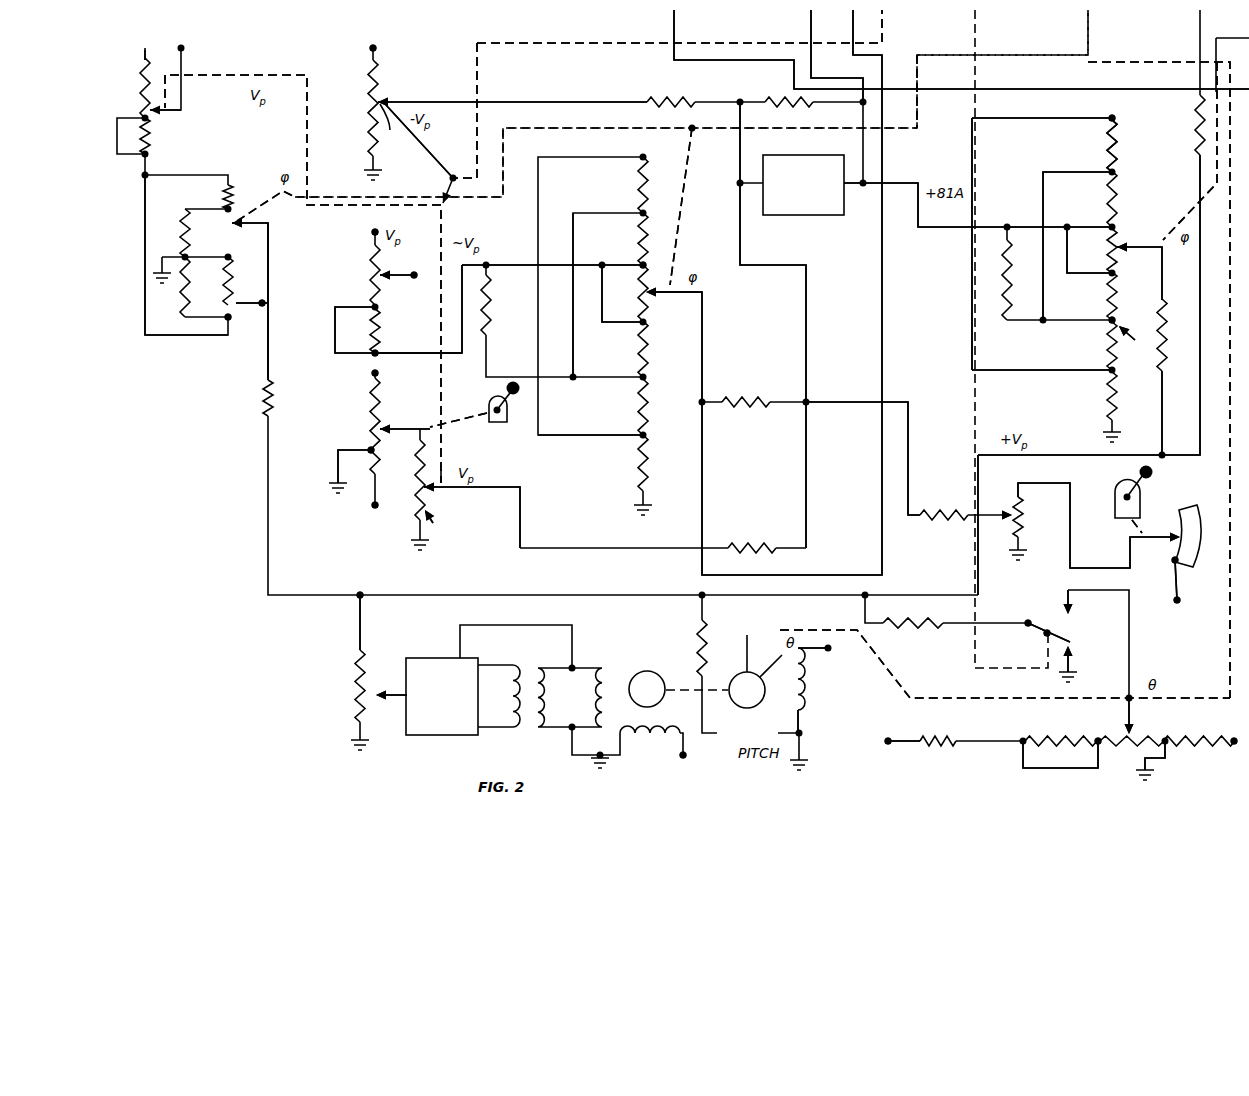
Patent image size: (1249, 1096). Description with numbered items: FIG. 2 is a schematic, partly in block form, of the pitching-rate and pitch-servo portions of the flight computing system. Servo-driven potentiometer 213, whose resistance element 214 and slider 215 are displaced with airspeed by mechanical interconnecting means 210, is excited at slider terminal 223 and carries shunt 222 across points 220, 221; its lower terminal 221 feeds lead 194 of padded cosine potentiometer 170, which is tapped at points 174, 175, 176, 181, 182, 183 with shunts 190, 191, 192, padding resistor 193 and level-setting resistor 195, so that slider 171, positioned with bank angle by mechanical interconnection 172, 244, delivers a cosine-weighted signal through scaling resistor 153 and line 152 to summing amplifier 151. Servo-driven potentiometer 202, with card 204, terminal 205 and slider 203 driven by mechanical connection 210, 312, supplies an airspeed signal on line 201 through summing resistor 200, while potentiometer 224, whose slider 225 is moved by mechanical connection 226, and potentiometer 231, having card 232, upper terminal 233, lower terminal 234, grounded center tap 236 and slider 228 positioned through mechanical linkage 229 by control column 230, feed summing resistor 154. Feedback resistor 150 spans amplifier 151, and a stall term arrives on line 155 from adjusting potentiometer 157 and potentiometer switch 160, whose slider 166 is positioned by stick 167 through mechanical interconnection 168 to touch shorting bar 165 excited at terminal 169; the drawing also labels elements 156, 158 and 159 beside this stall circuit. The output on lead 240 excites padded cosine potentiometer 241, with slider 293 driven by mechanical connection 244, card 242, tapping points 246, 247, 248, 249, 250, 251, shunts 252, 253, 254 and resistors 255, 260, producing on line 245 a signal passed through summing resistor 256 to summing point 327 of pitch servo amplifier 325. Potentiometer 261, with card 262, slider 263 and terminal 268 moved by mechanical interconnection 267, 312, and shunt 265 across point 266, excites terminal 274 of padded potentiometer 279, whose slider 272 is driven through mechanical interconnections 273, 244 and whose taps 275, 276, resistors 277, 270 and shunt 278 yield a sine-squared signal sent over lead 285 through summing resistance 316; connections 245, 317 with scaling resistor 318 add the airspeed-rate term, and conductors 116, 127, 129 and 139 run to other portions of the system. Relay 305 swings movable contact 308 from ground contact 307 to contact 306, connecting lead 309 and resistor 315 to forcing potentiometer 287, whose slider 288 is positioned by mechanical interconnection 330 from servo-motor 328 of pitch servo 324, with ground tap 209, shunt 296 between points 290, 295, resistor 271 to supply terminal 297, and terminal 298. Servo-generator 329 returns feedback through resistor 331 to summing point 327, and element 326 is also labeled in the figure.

The conductor 116 is at (672, 30).
The conductor 127 is at (810, 40).
The conductor 129 is at (853, 40).
The dashed connection 139 is at (1135, 60).
The feedback resistor 150 is at (788, 104).
The summing amplifier 151 is at (782, 156).
The line 152 is at (806, 340).
The scaling resistor 153 is at (760, 382).
The summing resistor 154 is at (760, 544).
The line 155 is at (866, 400).
The resistor 156 is at (940, 510).
The adjusting potentiometer 157 is at (1010, 497).
The wiper arm 158 is at (997, 526).
The conductor 159 is at (1024, 505).
The potentiometer switch 160 is at (1205, 510).
The shorting bar 165 is at (1192, 562).
The slider 166 is at (1176, 537).
The control column 167 is at (1122, 486).
The mechanical interconnection 168 is at (1126, 520).
The terminal 169 is at (1192, 584).
The padded cosine potentiometer 170 is at (652, 343).
The slider 171 is at (661, 293).
The mechanical interconnection 172 is at (688, 188).
The tapping point 174 is at (628, 142).
The tapping point 175 is at (642, 210).
The tapping point 176 is at (650, 268).
The tapping point 181 is at (646, 322).
The tapping point 182 is at (646, 377).
The tapping point 183 is at (646, 435).
The shunt 190 is at (602, 318).
The shunt 191 is at (622, 380).
The shunt 192 is at (520, 264).
The padding resistor 193 is at (492, 302).
The input line 194 is at (620, 264).
The level-setting resistor 195 is at (650, 456).
The summing resistor 200 is at (680, 100).
The line 201 is at (602, 102).
The servo-driven potentiometer 202 is at (383, 104).
The slider 203 is at (391, 126).
The card 204 is at (371, 145).
The terminal 205 is at (370, 48).
The ground tapping point 209 is at (1166, 746).
The mechanical interconnecting means 210 is at (438, 158).
The servo-driven potentiometer 213 is at (362, 274).
The resistance element 214 is at (374, 252).
The slider 215 is at (378, 290).
The point 220 is at (380, 318).
The lower terminal 221 is at (379, 352).
The shunt 222 is at (334, 344).
The slider terminal 223 is at (412, 274).
The servo-driven potentiometer 224 is at (443, 520).
The slider 225 is at (431, 490).
The mechanical connection 226 is at (443, 476).
The slider 228 is at (384, 426).
The mechanical linkage 229 is at (840, 664).
The control column 230 is at (488, 412).
The potentiometer 231 is at (362, 434).
The card 232 is at (419, 478).
The upper terminal 233 is at (378, 374).
The lower terminal 234 is at (376, 508).
The center tap 236 is at (364, 450).
The lead 240 is at (920, 172).
The padded cosine-function potentiometer 241 is at (1132, 317).
The card 242 is at (1118, 340).
The mechanical connection 244 is at (936, 128).
The line 245 is at (1118, 266).
The tapping point 246 is at (1127, 131).
The tapping point 247 is at (1106, 148).
The tapping point 248 is at (1106, 200).
The tapping point 249 is at (1086, 296).
The tapping point 250 is at (1106, 328).
The tapping point 251 is at (1108, 372).
The shunt 252 is at (1070, 116).
The shunt 253 is at (1094, 172).
The shunt 254 is at (1086, 270).
The resistor 255 is at (1014, 256).
The summing resistor 256 is at (1165, 322).
The resistor 260 is at (1106, 394).
The servo-driven potentiometer 261 is at (158, 127).
The card 262 is at (138, 96).
The slider 263 is at (164, 112).
The shunt 265 is at (117, 135).
The point 266 is at (157, 104).
The mechanical interconnection means 267 is at (270, 78).
The terminal 268 is at (183, 68).
The resistor 270 is at (183, 296).
The resistor 271 is at (226, 340).
The slider 272 is at (234, 232).
The mechanical interconnection 273 is at (212, 198).
The terminal 274 is at (145, 272).
The tap 275 is at (233, 262).
The tap 276 is at (252, 297).
The resistor 277 is at (182, 226).
The shunt 278 is at (198, 254).
The padded potentiometer 279 is at (176, 346).
The lead 285 is at (268, 340).
The forcing potentiometer 287 is at (1200, 750).
The slider 288 is at (1126, 728).
The left terminal 290 is at (1020, 746).
The slider 293 is at (1120, 240).
The point 295 is at (1100, 748).
The shunt 296 is at (1040, 770).
The supply terminal 297 is at (898, 738).
The terminal 298 is at (1236, 738).
The relay 305 is at (1040, 614).
The upper contact 306 is at (1085, 602).
The ground contact 307 is at (1072, 656).
The movable contact 308 is at (1052, 636).
The lead 309 is at (1010, 626).
The mechanical interconnection 312 is at (477, 92).
The resistor 315 is at (918, 634).
The summing resistance 316 is at (278, 386).
The connection 317 is at (1200, 372).
The scaling resistor 318 is at (1196, 130).
The pitch servo 324 is at (620, 654).
The pitch servo summing amplifier 325 is at (448, 664).
The potentiometer 326 is at (395, 655).
The summing point 327 is at (360, 608).
The servo-motor 328 is at (672, 662).
The servo-generator 329 is at (747, 648).
The mechanical interconnection 330 is at (850, 630).
The feedback summing resistor 331 is at (708, 650).